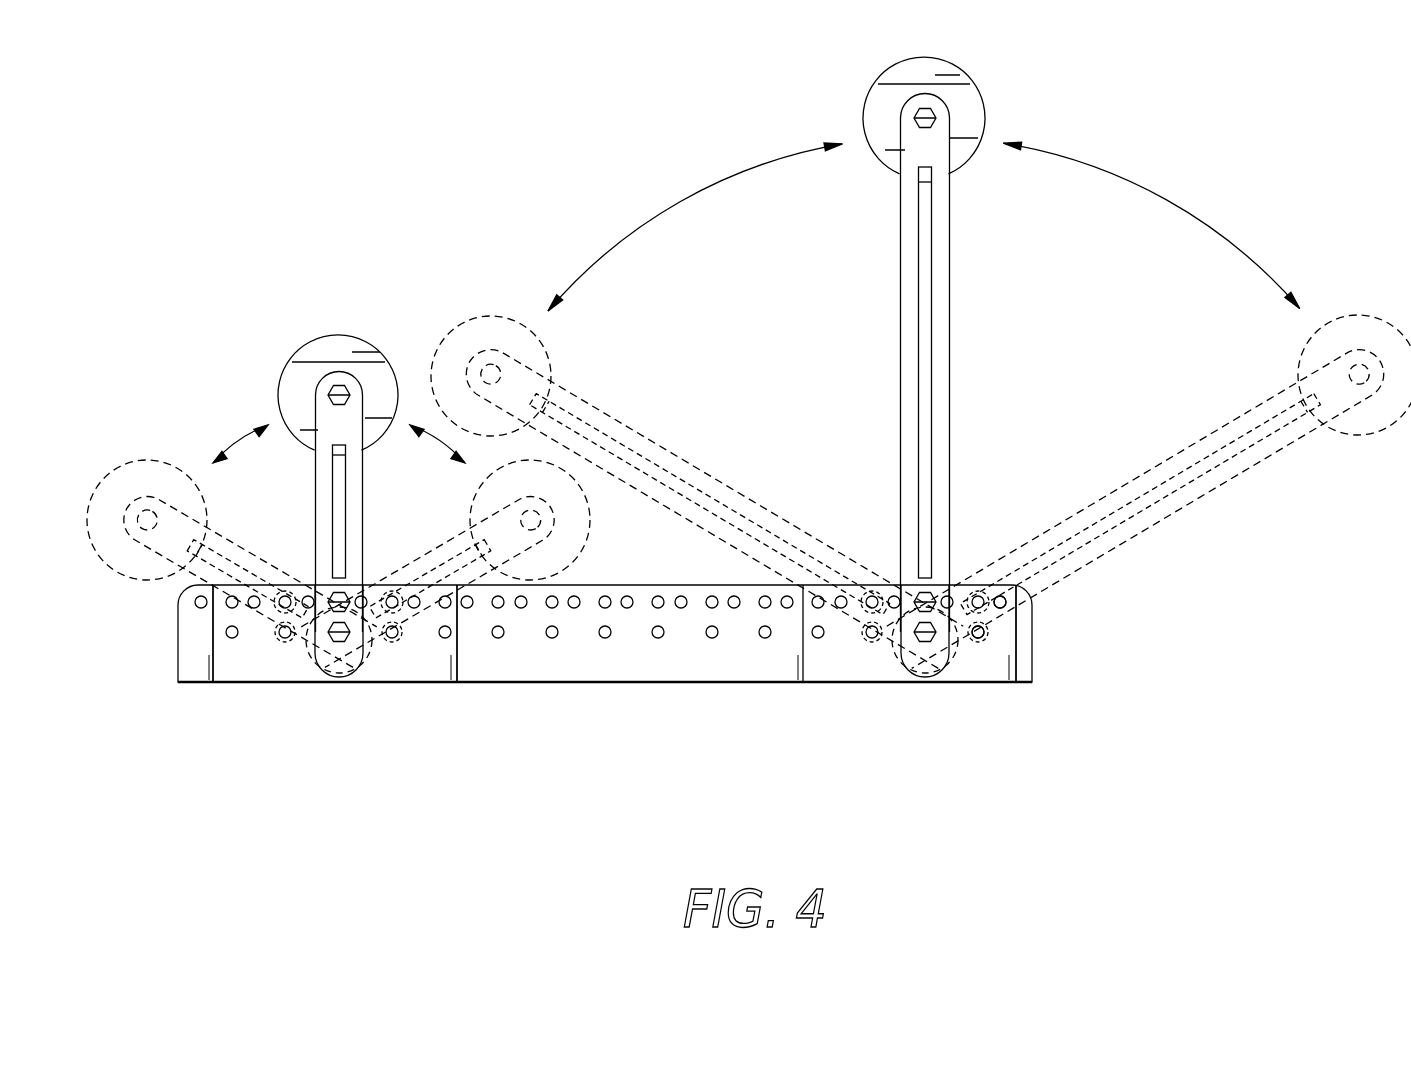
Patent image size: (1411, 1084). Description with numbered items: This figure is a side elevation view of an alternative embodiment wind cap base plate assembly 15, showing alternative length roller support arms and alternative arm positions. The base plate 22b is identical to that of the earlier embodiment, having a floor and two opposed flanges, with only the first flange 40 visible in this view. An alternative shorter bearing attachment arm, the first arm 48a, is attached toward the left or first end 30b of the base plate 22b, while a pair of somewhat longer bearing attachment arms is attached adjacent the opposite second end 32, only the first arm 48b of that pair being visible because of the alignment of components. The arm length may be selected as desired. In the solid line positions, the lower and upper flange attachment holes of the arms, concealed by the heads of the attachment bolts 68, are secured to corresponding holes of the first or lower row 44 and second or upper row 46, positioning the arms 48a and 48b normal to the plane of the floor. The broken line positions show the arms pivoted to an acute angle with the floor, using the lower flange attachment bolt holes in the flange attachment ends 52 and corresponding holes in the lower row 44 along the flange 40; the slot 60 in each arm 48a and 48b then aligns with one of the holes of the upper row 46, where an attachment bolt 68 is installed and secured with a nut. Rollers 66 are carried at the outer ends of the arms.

The base plate assembly 15 is at (1172, 763).
The base plate 22b is at (497, 683).
The first end 30b is at (202, 683).
The second end 32 is at (1032, 683).
The first flange 40 is at (625, 660).
The first or lower row of holes 44 is at (984, 632).
The second or upper row of holes 46 is at (1006, 604).
The first arm 48a is at (315, 497).
The first arm 48b is at (900, 347).
The flange attachment end 52 is at (342, 677).
The slot 60 is at (346, 503).
The pulley 66 is at (885, 168).
The attachment bolt 68 is at (320, 636).